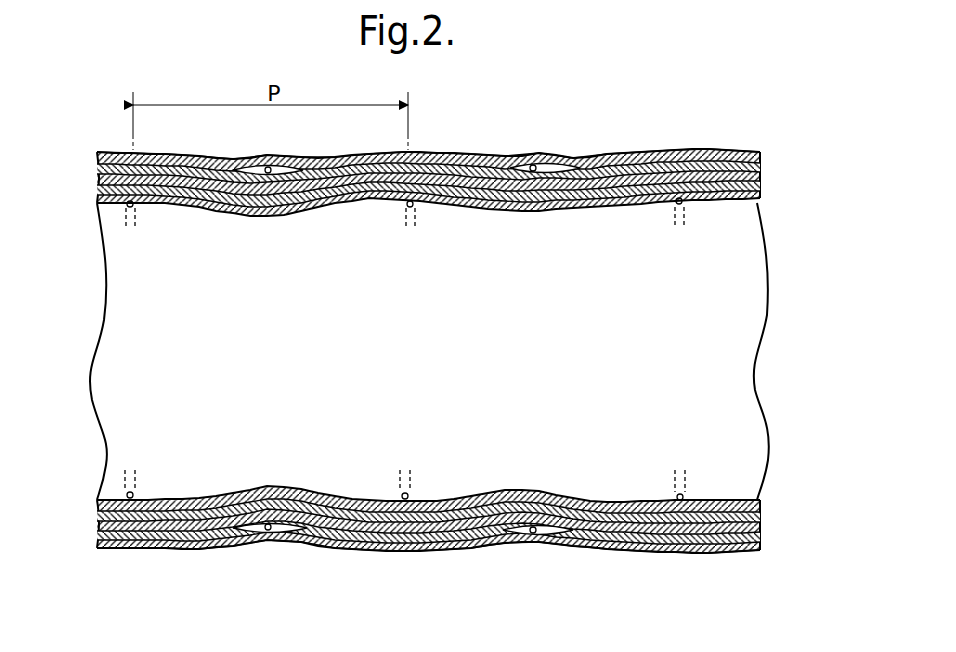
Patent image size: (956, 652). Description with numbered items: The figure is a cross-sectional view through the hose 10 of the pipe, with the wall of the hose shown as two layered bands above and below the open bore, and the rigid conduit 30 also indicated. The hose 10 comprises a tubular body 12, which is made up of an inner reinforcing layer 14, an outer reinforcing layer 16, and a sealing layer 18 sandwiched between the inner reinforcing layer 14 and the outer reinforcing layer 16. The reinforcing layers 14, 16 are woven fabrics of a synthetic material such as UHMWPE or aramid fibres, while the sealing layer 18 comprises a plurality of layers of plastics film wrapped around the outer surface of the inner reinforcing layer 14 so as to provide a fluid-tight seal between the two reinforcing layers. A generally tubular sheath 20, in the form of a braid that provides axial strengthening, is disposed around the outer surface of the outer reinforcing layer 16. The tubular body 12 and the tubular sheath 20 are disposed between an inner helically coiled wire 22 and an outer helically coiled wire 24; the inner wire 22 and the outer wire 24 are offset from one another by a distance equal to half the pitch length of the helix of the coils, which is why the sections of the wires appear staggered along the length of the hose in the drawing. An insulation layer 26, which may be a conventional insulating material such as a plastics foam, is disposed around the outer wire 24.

The hose 10 is at (781, 138).
The tubular body 12 is at (766, 164).
The inner reinforcing layer 14 is at (160, 205).
The outer reinforcing layer 16 is at (512, 200).
The sealing layer 18 is at (340, 210).
The tubular sheath 20 is at (622, 162).
The inner helically coiled wire 22 is at (128, 204).
The outer helically coiled wire 24 is at (273, 165).
The insulation layer 26 is at (213, 157).
The rigid conduit 30 is at (437, 152).